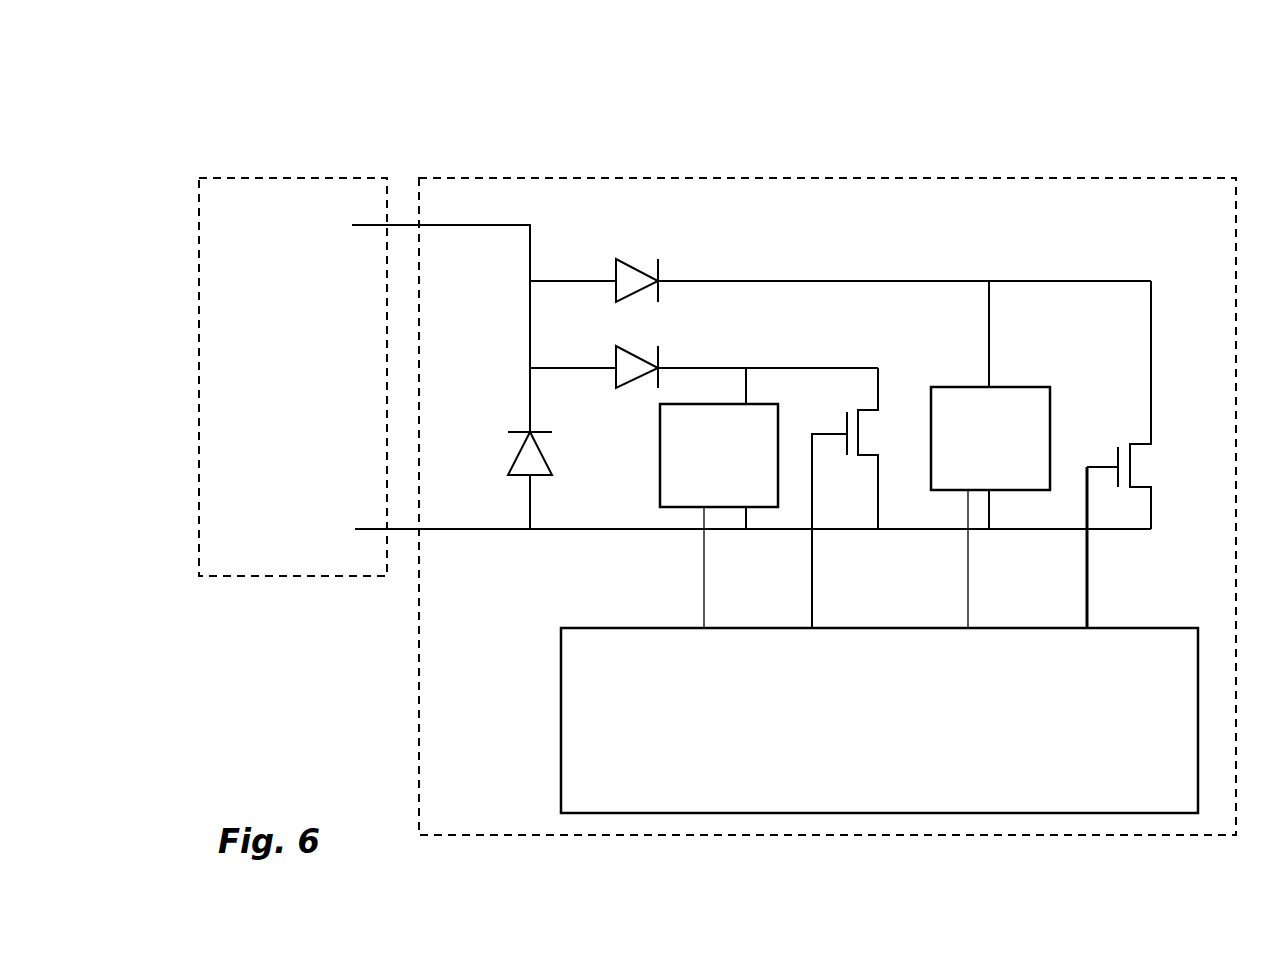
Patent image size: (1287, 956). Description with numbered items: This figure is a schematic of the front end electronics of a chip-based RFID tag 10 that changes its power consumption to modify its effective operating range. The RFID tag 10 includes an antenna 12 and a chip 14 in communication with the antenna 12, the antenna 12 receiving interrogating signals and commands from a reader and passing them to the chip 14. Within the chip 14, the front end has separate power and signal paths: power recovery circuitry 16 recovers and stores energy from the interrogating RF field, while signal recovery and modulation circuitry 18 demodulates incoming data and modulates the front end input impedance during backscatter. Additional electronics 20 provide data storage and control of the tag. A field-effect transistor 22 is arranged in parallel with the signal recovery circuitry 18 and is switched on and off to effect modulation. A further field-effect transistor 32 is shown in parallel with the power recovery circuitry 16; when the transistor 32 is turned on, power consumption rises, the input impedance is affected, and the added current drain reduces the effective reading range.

The RFID tag 10 is at (1153, 118).
The antenna 12 is at (275, 176).
The chip 14 is at (538, 176).
The power recovery circuitry 16 is at (660, 447).
The signal recovery and modulation circuitry 18 is at (1020, 387).
The additional electronics 20 is at (561, 700).
The field-effect transistor 22 is at (1145, 490).
The field-effect transistor 32 is at (895, 412).